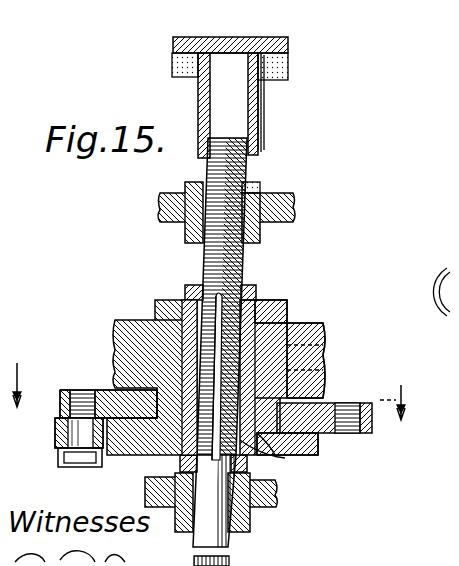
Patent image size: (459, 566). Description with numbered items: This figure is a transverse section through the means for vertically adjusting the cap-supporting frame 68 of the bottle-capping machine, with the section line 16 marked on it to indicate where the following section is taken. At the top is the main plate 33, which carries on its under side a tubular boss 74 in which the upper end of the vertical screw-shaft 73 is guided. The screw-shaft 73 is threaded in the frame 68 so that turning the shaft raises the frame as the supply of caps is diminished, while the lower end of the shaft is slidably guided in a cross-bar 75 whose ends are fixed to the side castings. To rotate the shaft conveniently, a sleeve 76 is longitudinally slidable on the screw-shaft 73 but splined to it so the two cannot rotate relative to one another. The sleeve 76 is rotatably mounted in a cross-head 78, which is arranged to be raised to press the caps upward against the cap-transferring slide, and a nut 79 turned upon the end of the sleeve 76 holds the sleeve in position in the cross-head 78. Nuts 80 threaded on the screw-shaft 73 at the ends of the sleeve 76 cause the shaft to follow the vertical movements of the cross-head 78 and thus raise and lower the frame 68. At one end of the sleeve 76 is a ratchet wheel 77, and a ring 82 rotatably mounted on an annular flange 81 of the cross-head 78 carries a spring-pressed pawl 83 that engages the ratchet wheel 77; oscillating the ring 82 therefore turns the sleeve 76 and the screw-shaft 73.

The main plate 33 is at (257, 46).
The tubular boss 74 is at (257, 108).
The screw-shaft 73 is at (242, 275).
The cap-supporting frame 68 is at (176, 202).
The nuts 80 is at (188, 292).
The sleeve 76 is at (258, 345).
The nut 79 is at (284, 307).
The cross-head 78 is at (326, 350).
The ring 82 is at (318, 412).
The ratchet wheel 77 is at (320, 448).
The annular flange 81 is at (285, 458).
The spring-pressed pawl 83 is at (62, 440).
The cross-bar 75 is at (266, 501).
The section line 16 is at (222, 391).